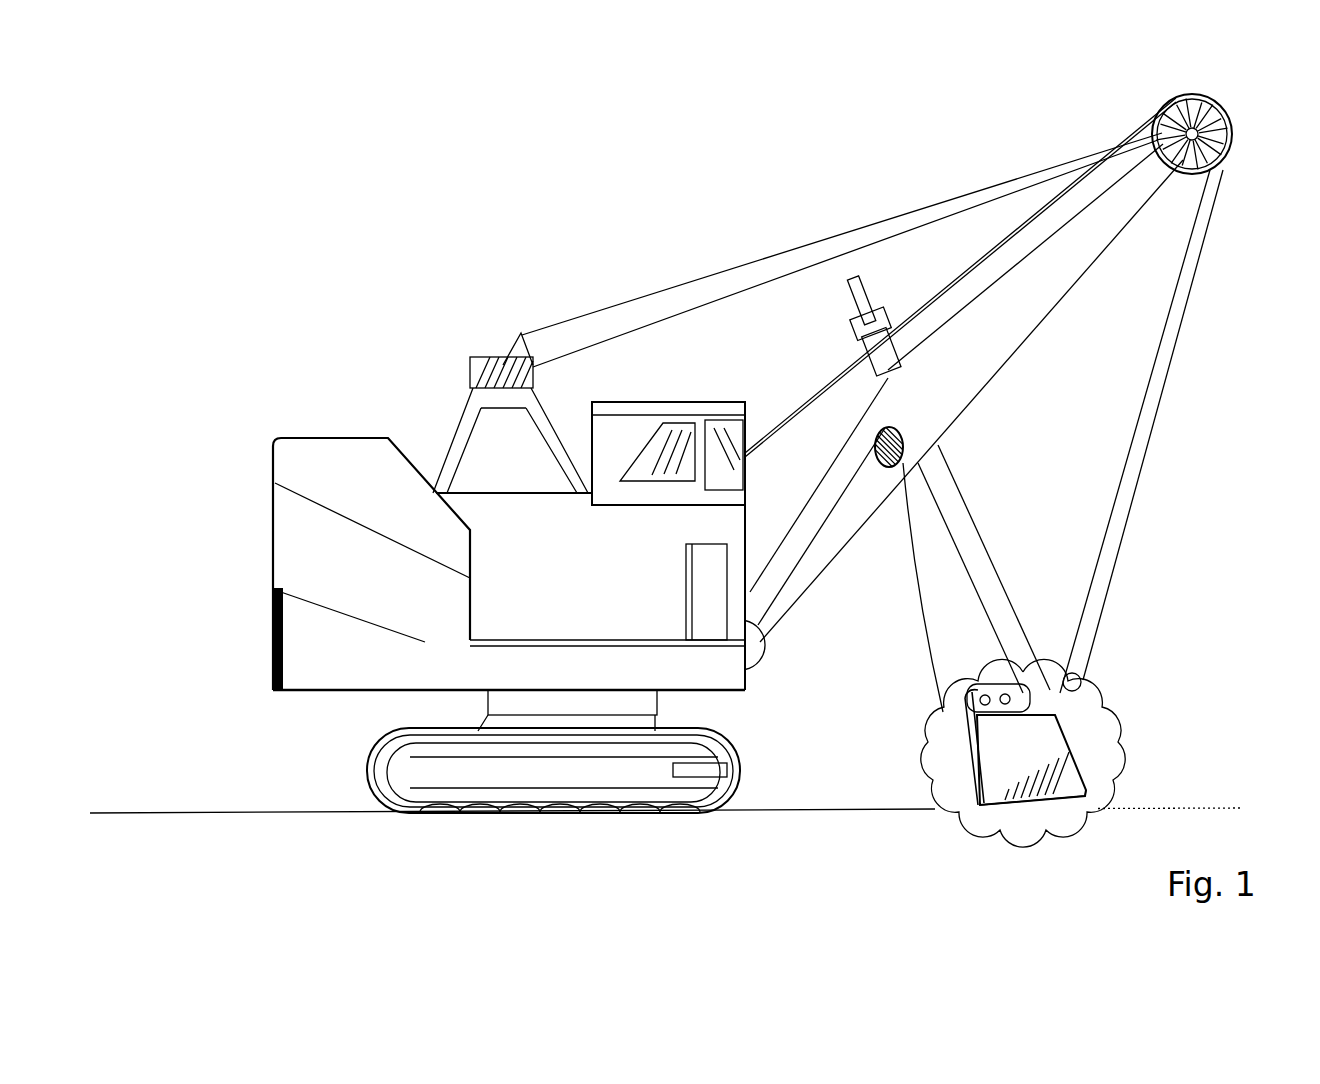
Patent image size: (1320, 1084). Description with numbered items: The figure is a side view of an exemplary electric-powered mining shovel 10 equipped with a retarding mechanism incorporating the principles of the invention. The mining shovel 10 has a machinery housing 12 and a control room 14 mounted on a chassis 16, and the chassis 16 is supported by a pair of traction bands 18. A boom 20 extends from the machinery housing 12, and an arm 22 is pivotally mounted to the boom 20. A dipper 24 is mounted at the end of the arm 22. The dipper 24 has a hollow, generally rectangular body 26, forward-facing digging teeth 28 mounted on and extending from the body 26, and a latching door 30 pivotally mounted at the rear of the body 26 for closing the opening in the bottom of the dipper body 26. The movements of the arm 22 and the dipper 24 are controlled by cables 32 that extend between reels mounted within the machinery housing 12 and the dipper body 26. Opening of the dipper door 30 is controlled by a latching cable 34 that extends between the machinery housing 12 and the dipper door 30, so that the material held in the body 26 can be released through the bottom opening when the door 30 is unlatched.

The mining shovel 10 is at (437, 213).
The machinery housing 12 is at (630, 590).
The control room 14 is at (630, 430).
The chassis 16 is at (493, 717).
The traction bands 18 is at (403, 772).
The boom 20 is at (1034, 297).
The arm 22 is at (965, 536).
The dipper 24 is at (1015, 759).
The dipper body 26 is at (1067, 744).
The digging teeth 28 is at (1105, 789).
The latching door 30 is at (969, 770).
The cables 32 is at (1125, 455).
The latching cable 34 is at (918, 607).